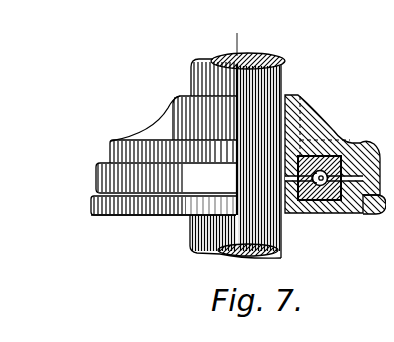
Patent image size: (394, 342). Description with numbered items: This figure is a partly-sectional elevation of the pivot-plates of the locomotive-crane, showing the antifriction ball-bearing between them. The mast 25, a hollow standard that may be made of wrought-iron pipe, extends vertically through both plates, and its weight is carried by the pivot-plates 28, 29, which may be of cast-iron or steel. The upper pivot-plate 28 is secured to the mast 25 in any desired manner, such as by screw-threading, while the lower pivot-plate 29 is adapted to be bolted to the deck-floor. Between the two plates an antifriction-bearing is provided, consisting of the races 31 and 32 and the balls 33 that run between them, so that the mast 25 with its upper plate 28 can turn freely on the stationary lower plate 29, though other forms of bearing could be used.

The mast 25 is at (260, 50).
The pivot-plate 28 is at (345, 140).
The pivot-plate 29 is at (370, 205).
The race 31 is at (307, 170).
The race 32 is at (319, 184).
The balls 33 is at (307, 184).